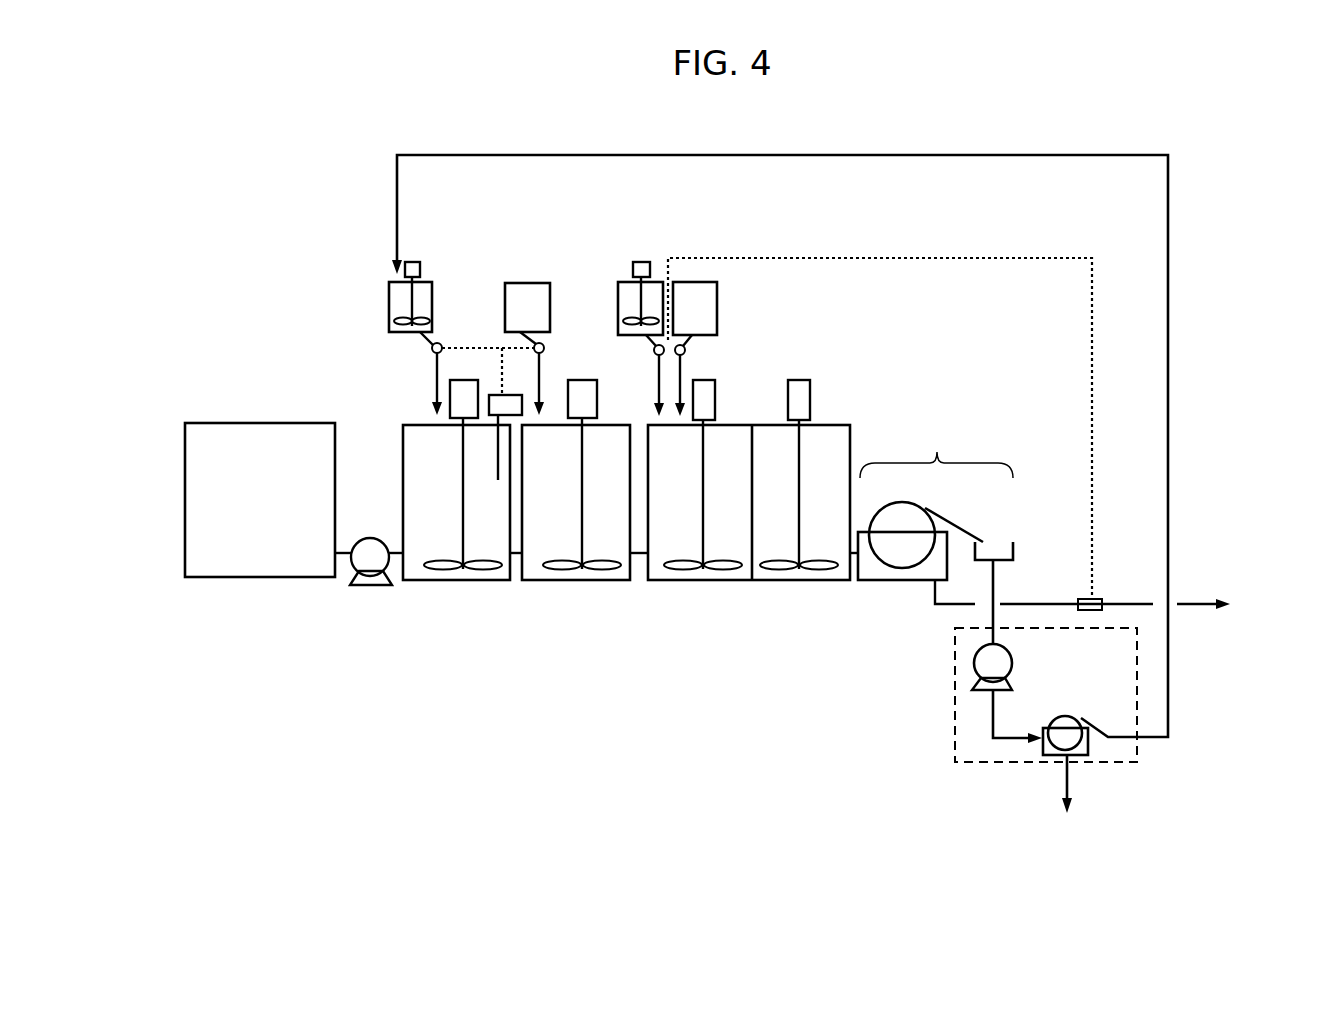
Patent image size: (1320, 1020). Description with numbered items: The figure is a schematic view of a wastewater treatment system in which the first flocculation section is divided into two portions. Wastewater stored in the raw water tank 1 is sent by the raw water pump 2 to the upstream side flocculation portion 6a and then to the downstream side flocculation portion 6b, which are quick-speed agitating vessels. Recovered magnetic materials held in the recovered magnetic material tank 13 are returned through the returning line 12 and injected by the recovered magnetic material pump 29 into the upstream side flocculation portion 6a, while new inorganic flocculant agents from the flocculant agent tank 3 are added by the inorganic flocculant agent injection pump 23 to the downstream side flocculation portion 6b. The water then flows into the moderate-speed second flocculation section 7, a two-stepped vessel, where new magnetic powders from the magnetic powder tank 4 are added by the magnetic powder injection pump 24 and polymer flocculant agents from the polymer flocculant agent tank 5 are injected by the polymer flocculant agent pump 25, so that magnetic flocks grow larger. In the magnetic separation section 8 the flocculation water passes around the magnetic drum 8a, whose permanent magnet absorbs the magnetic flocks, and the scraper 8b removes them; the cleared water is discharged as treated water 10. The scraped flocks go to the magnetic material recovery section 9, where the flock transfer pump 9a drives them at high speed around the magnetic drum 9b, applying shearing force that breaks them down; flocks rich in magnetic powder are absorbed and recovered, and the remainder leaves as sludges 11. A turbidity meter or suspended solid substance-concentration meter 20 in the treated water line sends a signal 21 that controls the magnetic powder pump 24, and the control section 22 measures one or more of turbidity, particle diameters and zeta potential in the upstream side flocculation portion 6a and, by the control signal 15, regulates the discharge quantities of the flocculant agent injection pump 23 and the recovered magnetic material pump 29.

The raw water tank 1 is at (205, 476).
The raw water pump 2 is at (378, 565).
The flocculant agent tank 3 is at (530, 300).
The magnetic powder tank 4 is at (652, 295).
The polymer flocculant agent tank 5 is at (705, 320).
The upstream side flocculation portion 6a is at (493, 538).
The downstream side flocculation portion 6b is at (605, 538).
The second flocculation section 7 is at (745, 570).
The magnetic separation section 8 is at (928, 447).
The magnetic drum 8a is at (897, 552).
The scraper 8b is at (967, 540).
The magnetic material recovery section 9 is at (955, 722).
The flock transfer pump 9a is at (992, 660).
The magnetic drum 9b is at (1068, 740).
The treated water 10 is at (1131, 605).
The sludges 11 is at (1066, 799).
The recovered magnetic material returning line 12 is at (1167, 420).
The recovered magnetic material tank 13 is at (397, 308).
The control signal 15 is at (486, 347).
The turbidity meter or suspended solid substance-concentration meter 20 is at (1090, 612).
The signal 21 is at (940, 260).
The control section 22 is at (512, 403).
The inorganic flocculant agent injection pump 23 is at (545, 347).
The magnetic powder injection pump 24 is at (654, 354).
The polymer flocculant agent pump 25 is at (686, 353).
The recovered magnetic material pump 29 is at (443, 351).